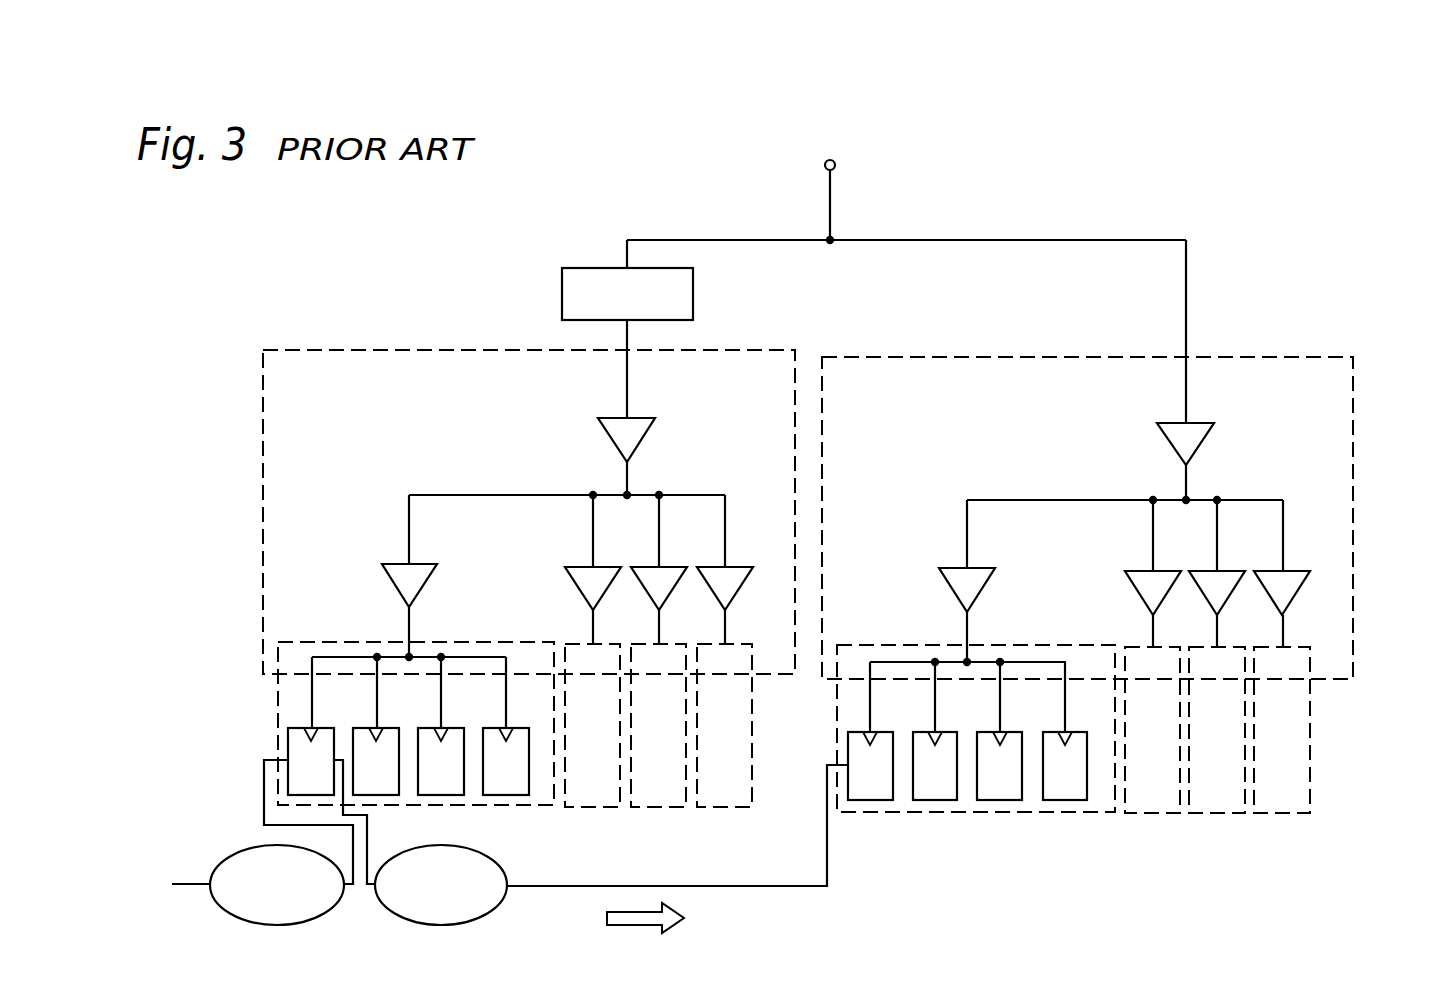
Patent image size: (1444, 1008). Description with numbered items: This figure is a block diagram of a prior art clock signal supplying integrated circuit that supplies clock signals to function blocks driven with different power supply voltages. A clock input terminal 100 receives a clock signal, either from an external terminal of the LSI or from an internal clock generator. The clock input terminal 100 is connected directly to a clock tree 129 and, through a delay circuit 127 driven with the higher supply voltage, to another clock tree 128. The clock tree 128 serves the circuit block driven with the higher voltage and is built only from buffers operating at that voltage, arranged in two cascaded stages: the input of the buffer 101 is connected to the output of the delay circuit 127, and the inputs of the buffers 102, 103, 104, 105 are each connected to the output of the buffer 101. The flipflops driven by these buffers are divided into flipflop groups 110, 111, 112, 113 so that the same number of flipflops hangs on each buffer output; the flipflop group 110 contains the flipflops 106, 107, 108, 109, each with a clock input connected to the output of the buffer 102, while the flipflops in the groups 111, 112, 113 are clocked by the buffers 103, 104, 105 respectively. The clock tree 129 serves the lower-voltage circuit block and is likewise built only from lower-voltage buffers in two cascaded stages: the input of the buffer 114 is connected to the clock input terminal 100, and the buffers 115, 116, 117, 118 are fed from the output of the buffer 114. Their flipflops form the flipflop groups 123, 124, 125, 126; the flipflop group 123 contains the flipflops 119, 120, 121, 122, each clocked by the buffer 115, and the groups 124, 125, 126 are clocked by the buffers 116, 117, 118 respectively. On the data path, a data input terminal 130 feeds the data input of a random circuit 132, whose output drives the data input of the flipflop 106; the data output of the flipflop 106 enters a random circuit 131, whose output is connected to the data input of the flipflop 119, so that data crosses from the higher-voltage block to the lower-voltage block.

The clock input terminal 100 is at (836, 168).
The buffer 101 is at (636, 417).
The buffer 102 is at (422, 563).
The buffer 103 is at (606, 566).
The buffer 104 is at (672, 566).
The buffer 105 is at (738, 566).
The flipflop 106 is at (322, 727).
The flipflop 107 is at (387, 727).
The flipflop 108 is at (451, 727).
The flipflop 109 is at (513, 727).
The flipflop group 110 is at (514, 641).
The flipflop group 111 is at (606, 643).
The flipflop group 112 is at (672, 643).
The flipflop group 113 is at (738, 643).
The buffer 114 is at (1198, 422).
The buffer 115 is at (980, 567).
The buffer 116 is at (1166, 570).
The buffer 117 is at (1232, 570).
The buffer 118 is at (1297, 570).
The flipflop 119 is at (881, 731).
The flipflop 120 is at (946, 731).
The flipflop 121 is at (1012, 731).
The flipflop 122 is at (1074, 731).
The flipflop group 123 is at (1072, 644).
The flipflop group 124 is at (1167, 646).
The flipflop group 125 is at (1232, 646).
The flipflop group 126 is at (1297, 646).
The delay circuit 127 is at (584, 267).
The clock tree 128 is at (728, 348).
The clock tree 129 is at (1220, 355).
The data input terminal 130 is at (201, 887).
The random circuit 131 is at (490, 860).
The random circuit 132 is at (330, 912).